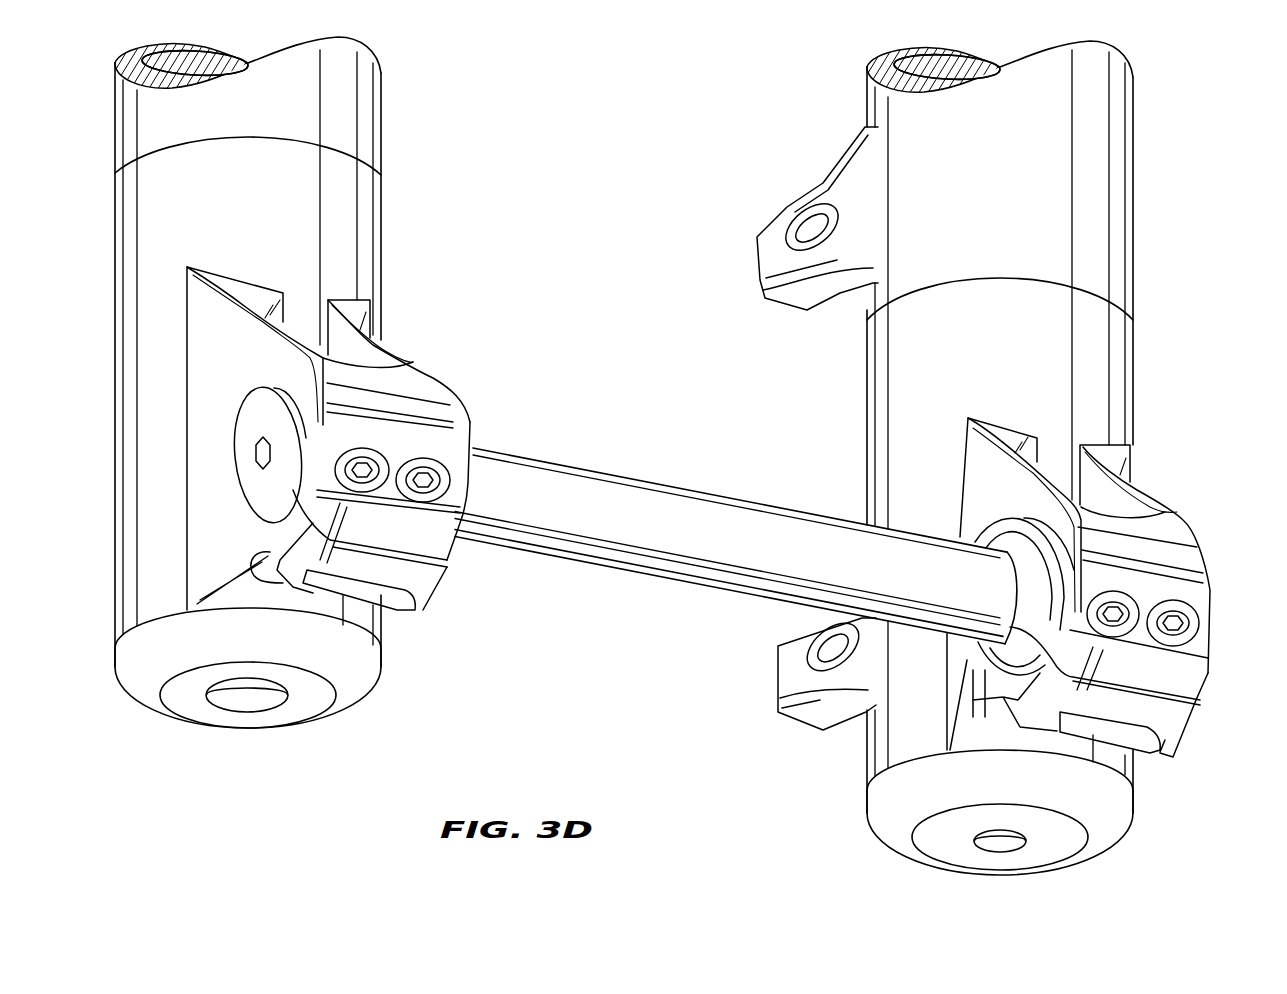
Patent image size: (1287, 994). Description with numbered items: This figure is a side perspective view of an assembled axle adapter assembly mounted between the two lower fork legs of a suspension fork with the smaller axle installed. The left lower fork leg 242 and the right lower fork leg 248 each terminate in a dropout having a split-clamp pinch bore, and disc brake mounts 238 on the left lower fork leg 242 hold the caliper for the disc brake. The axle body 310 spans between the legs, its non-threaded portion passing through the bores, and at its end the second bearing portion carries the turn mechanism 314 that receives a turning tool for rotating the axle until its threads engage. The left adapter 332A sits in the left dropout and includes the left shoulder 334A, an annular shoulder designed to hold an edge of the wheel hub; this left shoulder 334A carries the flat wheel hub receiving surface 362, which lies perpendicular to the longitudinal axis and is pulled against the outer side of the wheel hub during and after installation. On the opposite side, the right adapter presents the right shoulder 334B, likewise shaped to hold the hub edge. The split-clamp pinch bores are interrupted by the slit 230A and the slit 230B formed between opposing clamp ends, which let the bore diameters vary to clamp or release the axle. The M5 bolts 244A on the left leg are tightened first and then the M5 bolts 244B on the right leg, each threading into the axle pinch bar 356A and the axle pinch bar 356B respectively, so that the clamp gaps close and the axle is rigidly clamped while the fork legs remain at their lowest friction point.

The right lower fork leg 248 is at (383, 108).
The left lower fork leg 242 is at (1134, 148).
The disc brake mount 238 is at (757, 284).
The axle body 310 is at (665, 578).
The slit 230B is at (300, 460).
The right shoulder 334B is at (476, 412).
The M5 bolts 244B is at (338, 428).
The turn mechanism 314 is at (255, 452).
The axle pinch bar 356B is at (393, 614).
The slit 230A is at (1033, 609).
The left shoulder 334A is at (982, 508).
The M5 bolts 244A is at (1196, 624).
The axle pinch bar 356A is at (1143, 760).
The left adapter 332A is at (977, 678).
The wheel hub receiving surface 362 is at (990, 652).